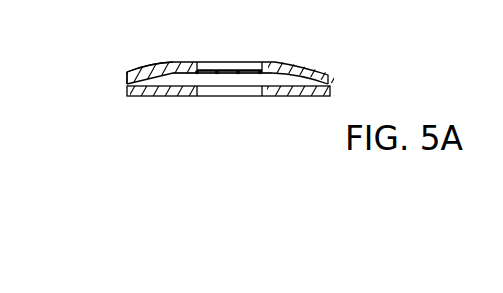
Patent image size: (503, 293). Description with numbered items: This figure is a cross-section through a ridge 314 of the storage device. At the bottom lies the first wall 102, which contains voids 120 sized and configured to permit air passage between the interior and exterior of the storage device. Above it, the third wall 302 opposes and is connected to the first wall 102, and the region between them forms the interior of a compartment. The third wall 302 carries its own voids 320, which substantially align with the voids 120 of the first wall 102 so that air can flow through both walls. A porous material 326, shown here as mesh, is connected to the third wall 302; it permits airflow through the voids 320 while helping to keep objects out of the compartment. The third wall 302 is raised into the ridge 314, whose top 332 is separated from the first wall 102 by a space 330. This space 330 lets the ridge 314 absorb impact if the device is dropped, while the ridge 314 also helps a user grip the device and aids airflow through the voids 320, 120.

The first wall 102 is at (133, 90).
The voids 120 is at (223, 92).
The third wall 302 is at (127, 72).
The ridge 314 is at (152, 71).
The voids 320 is at (223, 62).
The porous material 326 is at (270, 78).
The space 330 is at (280, 61).
The top of the ridge 332 is at (185, 62).